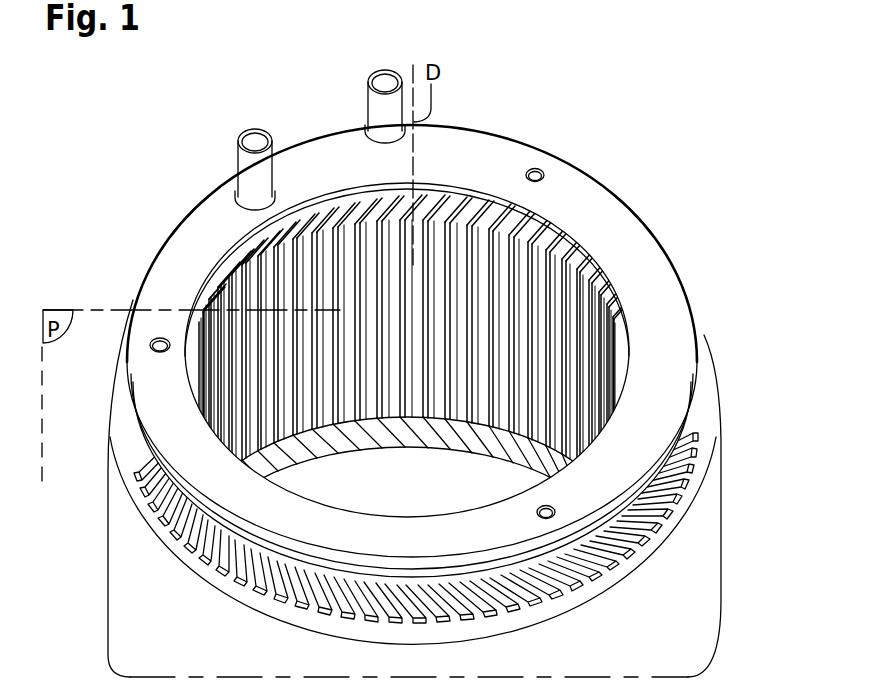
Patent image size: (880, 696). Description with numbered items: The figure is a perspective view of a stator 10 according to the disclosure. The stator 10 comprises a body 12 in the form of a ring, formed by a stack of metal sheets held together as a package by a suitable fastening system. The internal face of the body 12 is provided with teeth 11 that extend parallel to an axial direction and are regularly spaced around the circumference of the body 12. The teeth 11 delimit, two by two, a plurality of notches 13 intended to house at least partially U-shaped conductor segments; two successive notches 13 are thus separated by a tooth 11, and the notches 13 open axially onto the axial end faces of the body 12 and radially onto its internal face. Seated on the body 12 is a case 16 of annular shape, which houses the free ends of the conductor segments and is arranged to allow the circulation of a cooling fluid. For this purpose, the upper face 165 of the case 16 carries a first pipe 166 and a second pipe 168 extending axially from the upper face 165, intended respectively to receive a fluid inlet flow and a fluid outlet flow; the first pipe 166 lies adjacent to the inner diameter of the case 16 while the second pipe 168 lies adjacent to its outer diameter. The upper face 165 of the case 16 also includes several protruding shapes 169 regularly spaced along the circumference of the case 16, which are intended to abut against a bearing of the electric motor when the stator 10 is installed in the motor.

The stator 10 is at (676, 208).
The teeth 11 is at (372, 428).
The body 12 is at (700, 533).
The notches 13 is at (485, 402).
The case 16 is at (463, 160).
The upper face 165 is at (660, 331).
The first pipe 166 is at (243, 187).
The second pipe 168 is at (378, 114).
The protruding shapes 169 is at (535, 167).